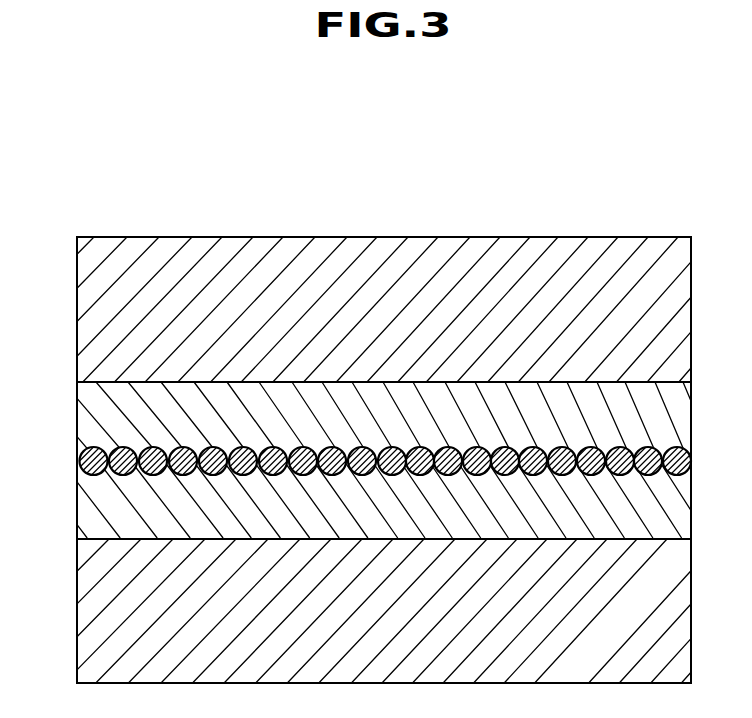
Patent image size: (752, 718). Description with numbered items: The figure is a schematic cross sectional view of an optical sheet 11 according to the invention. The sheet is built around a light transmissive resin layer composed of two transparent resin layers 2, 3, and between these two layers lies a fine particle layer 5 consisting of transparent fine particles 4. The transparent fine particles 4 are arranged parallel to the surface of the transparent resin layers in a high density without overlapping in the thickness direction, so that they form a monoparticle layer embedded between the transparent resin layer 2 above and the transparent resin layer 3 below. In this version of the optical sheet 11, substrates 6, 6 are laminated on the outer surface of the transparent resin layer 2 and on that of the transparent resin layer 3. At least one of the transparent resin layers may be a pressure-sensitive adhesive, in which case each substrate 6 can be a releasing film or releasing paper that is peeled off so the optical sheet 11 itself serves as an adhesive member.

The optical sheet 11 is at (317, 205).
The substrate 6 is at (96, 307).
The transparent resin layer 2 is at (98, 413).
The transparent resin layer 3 is at (88, 524).
The transparent fine particles 4 is at (84, 455).
The fine particle layer 5 is at (32, 430).